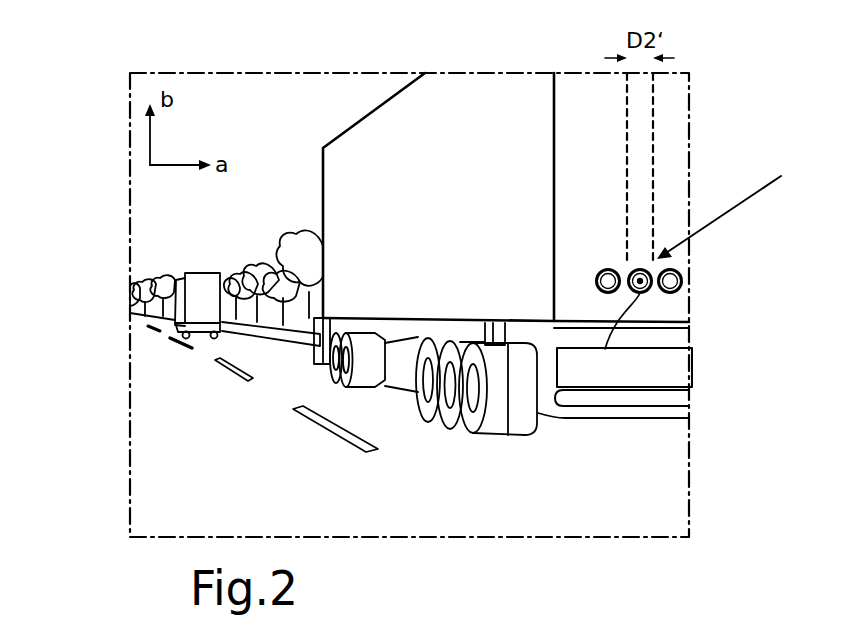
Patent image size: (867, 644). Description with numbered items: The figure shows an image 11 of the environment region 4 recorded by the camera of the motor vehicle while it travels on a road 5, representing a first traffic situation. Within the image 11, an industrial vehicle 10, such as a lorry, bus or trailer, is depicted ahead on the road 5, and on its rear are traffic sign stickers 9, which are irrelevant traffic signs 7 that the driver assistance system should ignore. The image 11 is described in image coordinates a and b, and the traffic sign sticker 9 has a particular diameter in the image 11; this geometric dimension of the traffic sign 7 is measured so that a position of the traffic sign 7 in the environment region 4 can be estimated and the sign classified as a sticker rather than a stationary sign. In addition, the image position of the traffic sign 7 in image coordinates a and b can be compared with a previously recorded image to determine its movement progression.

The environment region 4 is at (236, 227).
The road 5 is at (180, 388).
The traffic sign 7 is at (727, 207).
The traffic sign sticker 9 is at (609, 266).
The industrial vehicle 10 is at (476, 132).
The image 11 is at (237, 116).